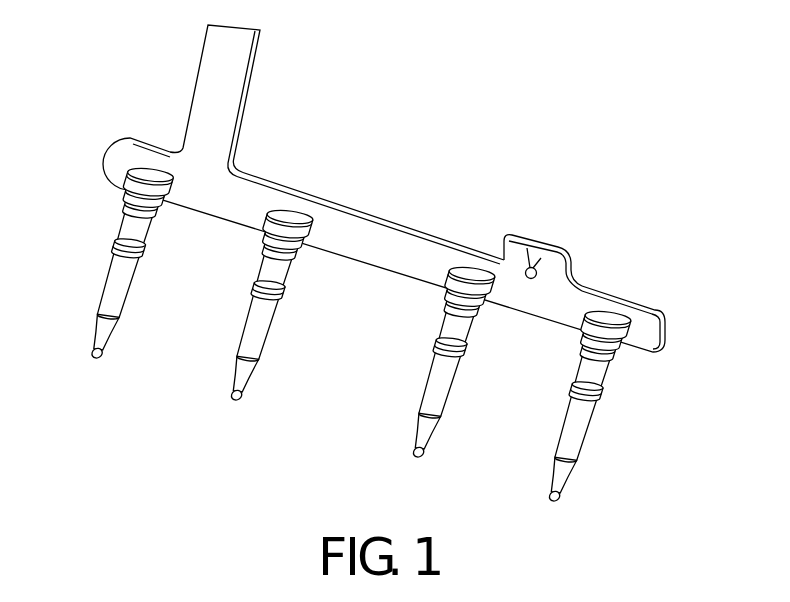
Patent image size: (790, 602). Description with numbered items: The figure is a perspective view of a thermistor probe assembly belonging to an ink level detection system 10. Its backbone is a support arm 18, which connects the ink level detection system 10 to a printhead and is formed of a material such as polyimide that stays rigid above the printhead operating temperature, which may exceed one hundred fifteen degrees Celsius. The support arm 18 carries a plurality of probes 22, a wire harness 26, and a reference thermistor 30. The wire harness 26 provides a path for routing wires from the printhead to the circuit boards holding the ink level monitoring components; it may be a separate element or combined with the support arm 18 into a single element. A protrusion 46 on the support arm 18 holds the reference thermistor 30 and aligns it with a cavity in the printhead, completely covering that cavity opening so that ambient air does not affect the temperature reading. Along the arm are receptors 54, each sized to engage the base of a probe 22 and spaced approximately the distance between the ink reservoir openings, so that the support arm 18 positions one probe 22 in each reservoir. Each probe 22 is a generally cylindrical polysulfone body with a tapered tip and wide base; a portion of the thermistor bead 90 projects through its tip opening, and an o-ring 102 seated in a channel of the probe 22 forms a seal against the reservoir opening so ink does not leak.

The ink level detection system 10 is at (677, 229).
The support arm 18 is at (378, 217).
The probe 22 is at (123, 272).
The wire harness 26 is at (217, 57).
The reference thermistor 30 is at (537, 232).
The protrusion 46 is at (541, 262).
The receptor 54 is at (150, 174).
The thermistor bead 90 is at (93, 350).
The o-ring 102 is at (138, 195).